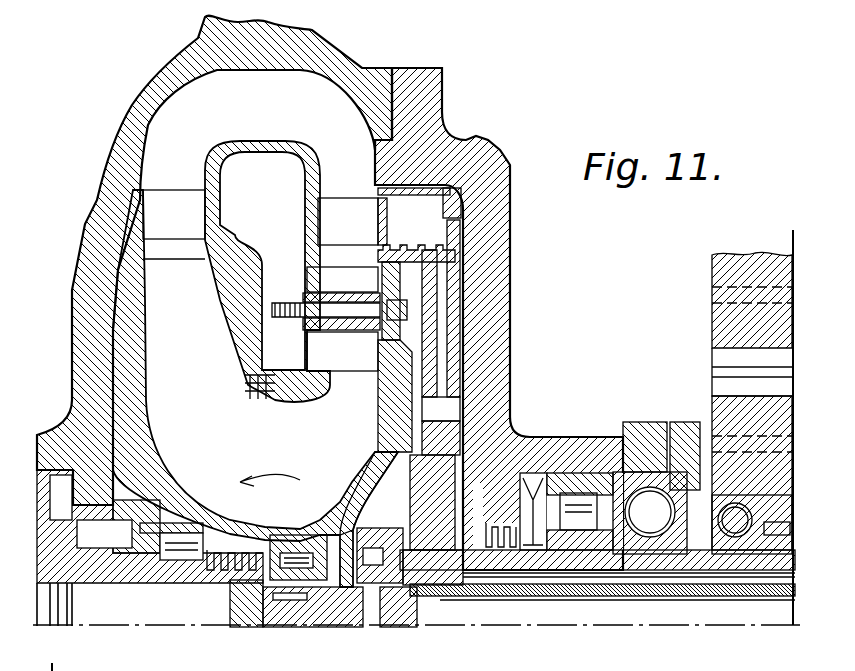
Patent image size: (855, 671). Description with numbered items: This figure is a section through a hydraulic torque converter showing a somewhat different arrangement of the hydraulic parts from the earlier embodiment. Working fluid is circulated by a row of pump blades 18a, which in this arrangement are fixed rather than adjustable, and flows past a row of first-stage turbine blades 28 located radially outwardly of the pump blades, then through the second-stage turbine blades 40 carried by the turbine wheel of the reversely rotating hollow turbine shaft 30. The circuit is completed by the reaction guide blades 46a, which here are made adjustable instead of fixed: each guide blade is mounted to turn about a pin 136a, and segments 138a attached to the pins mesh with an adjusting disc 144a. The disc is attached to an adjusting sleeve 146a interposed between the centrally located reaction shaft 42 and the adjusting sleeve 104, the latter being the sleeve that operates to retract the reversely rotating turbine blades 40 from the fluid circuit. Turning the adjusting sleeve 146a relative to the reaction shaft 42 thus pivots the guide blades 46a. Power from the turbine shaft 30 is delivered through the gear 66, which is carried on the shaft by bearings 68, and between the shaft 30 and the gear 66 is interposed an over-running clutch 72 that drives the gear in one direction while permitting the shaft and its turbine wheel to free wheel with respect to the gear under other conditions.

The pump blades 18a is at (332, 380).
The turbine blades 28 is at (172, 200).
The turbine blades 40 is at (343, 205).
The pins 136a is at (318, 310).
The guide blades 46a is at (350, 362).
The segments 138a is at (395, 392).
The adjusting disc 144a is at (375, 487).
The adjusting sleeve 146a is at (437, 588).
The adjusting sleeve 104 is at (655, 572).
The bearings 68 is at (738, 537).
The over-running clutch 72 is at (785, 530).
The turbine shaft 30 is at (685, 570).
The gear 66 is at (717, 408).
The reaction shaft 42 is at (568, 618).